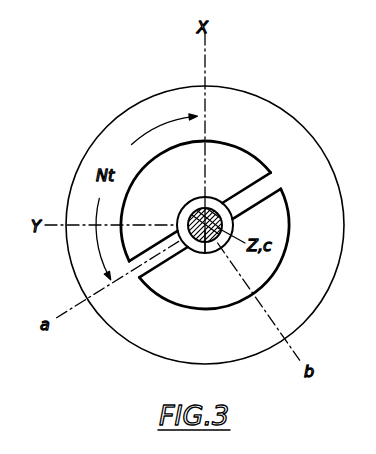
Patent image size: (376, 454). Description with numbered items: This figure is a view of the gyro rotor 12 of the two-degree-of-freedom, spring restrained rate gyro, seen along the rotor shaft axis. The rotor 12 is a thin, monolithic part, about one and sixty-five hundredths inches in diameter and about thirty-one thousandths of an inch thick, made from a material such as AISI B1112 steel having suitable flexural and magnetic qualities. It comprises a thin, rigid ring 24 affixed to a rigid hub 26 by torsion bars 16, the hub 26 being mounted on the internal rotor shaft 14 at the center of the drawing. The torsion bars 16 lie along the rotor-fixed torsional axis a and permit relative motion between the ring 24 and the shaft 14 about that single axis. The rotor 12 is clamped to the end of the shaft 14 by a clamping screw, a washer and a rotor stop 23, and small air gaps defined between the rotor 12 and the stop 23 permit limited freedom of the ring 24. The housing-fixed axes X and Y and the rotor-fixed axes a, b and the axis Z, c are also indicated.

The rotor 12 is at (205, 185).
The shaft 14 is at (204, 214).
The torsion bars 16 is at (253, 184).
The rotor stop 23 is at (205, 253).
The rigid ring 24 is at (285, 123).
The rigid hub 26 is at (177, 211).